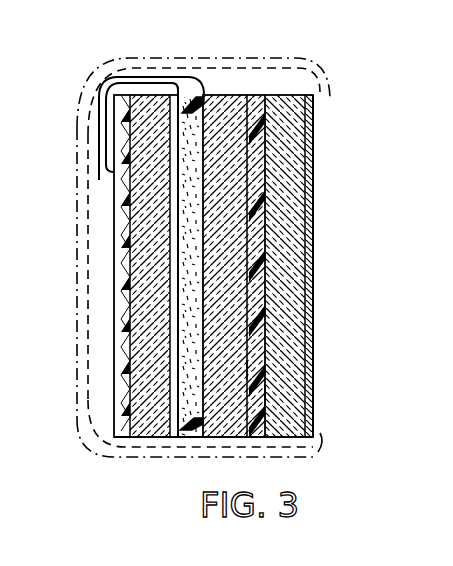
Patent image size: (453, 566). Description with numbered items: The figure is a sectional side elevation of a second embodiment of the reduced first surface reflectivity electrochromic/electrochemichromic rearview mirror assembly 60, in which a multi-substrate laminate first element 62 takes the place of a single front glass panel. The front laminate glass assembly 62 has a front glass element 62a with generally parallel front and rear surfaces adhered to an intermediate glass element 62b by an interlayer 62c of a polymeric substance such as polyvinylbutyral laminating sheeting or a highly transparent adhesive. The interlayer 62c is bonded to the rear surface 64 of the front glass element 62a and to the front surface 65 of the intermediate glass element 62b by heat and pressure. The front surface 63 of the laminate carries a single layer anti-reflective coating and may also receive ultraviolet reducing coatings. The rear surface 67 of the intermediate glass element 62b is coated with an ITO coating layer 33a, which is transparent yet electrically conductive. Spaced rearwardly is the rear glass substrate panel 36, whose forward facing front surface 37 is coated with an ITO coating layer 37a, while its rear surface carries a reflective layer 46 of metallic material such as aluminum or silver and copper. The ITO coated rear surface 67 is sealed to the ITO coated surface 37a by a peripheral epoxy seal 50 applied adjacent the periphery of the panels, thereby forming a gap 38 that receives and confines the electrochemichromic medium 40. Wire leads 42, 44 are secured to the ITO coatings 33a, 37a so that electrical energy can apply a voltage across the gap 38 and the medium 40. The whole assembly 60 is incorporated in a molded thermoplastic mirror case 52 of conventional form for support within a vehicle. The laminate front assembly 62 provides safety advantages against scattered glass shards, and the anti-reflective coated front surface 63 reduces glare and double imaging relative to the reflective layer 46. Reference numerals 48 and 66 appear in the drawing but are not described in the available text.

The reduced reflectivity rearview mirror assembly 60 is at (385, 52).
The mirror case 52 is at (300, 42).
The peripheral seal 50 is at (196, 94).
The reflective layer 46 is at (99, 82).
The inner wrap layer 48 is at (106, 105).
The wire lead 42 is at (78, 128).
The wire lead 44 is at (108, 170).
The front surface of rear element 37 is at (113, 216).
The ITO coating layer 37a is at (117, 185).
The rear glass substrate panel 36 is at (135, 261).
The gap 38 is at (182, 304).
The electrochemichromic medium 40 is at (188, 352).
The laminate first element 62 is at (333, 119).
The front glass element 62a is at (314, 216).
The intermediate glass element 62b is at (247, 342).
The interlayer 62c is at (263, 272).
The ITO coating layer 33a is at (213, 237).
The front surface of laminate assembly 63 is at (250, 302).
The rear surface of front glass panel 64 is at (247, 369).
The front surface of intermediate glass panel 65 is at (267, 392).
The outer cathode layer 66 is at (315, 151).
The rear surface of intermediate glass element 67 is at (203, 170).